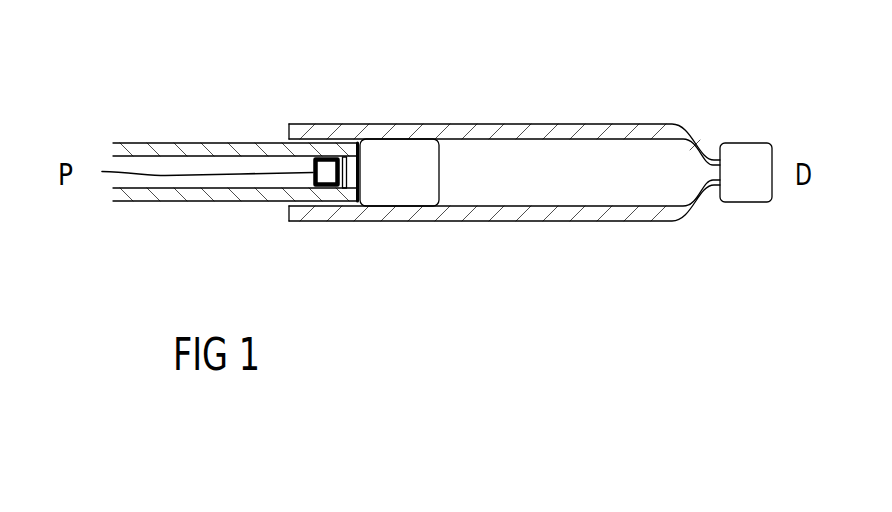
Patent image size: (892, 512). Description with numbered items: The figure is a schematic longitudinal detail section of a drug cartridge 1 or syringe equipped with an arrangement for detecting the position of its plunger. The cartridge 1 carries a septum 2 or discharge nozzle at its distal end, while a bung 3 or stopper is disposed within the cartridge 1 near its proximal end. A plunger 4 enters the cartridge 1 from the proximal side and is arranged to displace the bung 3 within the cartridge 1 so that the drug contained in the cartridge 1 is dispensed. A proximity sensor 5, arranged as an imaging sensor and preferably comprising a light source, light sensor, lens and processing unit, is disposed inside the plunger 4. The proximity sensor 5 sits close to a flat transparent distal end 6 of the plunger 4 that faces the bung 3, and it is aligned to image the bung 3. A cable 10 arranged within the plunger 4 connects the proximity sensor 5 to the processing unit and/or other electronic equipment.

The cartridge 1 is at (547, 124).
The septum 2 is at (747, 157).
The bung 3 is at (404, 145).
The plunger 4 is at (237, 148).
The proximity sensor 5 is at (328, 165).
The transparent distal end 6 is at (352, 182).
The cable 10 is at (162, 177).